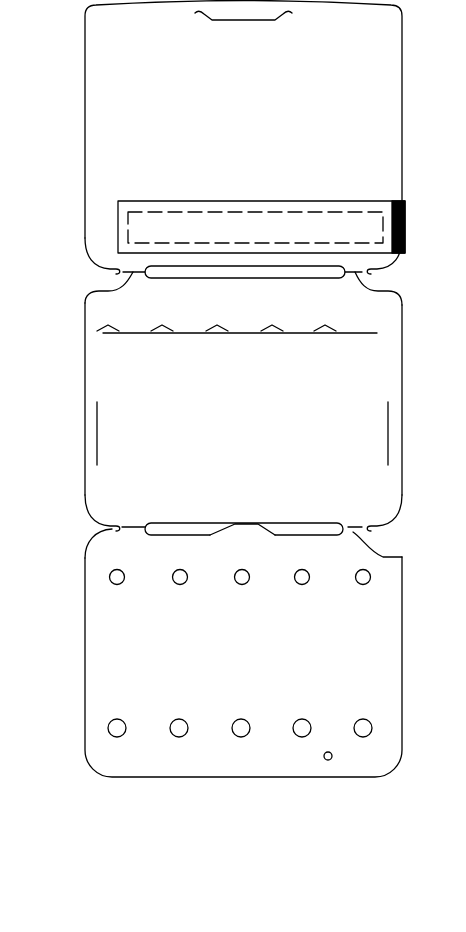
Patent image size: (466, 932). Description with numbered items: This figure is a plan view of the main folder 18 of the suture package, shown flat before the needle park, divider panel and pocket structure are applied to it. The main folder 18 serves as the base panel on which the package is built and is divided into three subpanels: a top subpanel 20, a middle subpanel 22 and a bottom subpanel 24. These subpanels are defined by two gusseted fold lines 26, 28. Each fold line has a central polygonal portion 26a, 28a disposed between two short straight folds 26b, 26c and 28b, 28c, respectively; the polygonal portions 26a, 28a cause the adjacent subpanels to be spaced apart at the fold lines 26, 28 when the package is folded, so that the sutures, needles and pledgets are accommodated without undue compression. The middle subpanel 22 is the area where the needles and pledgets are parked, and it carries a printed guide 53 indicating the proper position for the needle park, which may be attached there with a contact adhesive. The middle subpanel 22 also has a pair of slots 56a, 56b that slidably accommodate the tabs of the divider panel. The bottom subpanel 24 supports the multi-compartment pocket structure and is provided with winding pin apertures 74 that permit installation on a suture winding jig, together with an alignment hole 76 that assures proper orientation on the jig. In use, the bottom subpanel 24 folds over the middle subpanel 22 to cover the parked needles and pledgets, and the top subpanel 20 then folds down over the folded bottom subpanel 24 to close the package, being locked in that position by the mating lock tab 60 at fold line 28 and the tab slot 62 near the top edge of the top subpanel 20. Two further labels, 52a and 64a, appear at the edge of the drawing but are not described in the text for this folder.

The main folder 18 is at (65, 238).
The top subpanel 20 is at (103, 123).
The middle subpanel 22 is at (100, 384).
The bottom subpanel 24 is at (102, 665).
The gusseted fold line 26 is at (347, 279).
The central polygonal portion 26a is at (215, 278).
The short straight fold 26b is at (85, 297).
The short straight fold 26c is at (405, 277).
The gusseted fold line 28 is at (337, 518).
The central polygonal portion 28a is at (317, 535).
The short straight fold 28b is at (135, 528).
The short straight fold 28c is at (398, 558).
The printed guide 53 is at (240, 333).
The slot 56a is at (97, 430).
The slot 56b is at (388, 426).
The lock tab 60 is at (242, 522).
The tab slot 62 is at (232, 20).
The winding pin apertures 74 is at (108, 726).
The alignment hole 76 is at (328, 760).
The side member 52a is at (465, 704).
The side member tab 64a is at (465, 778).